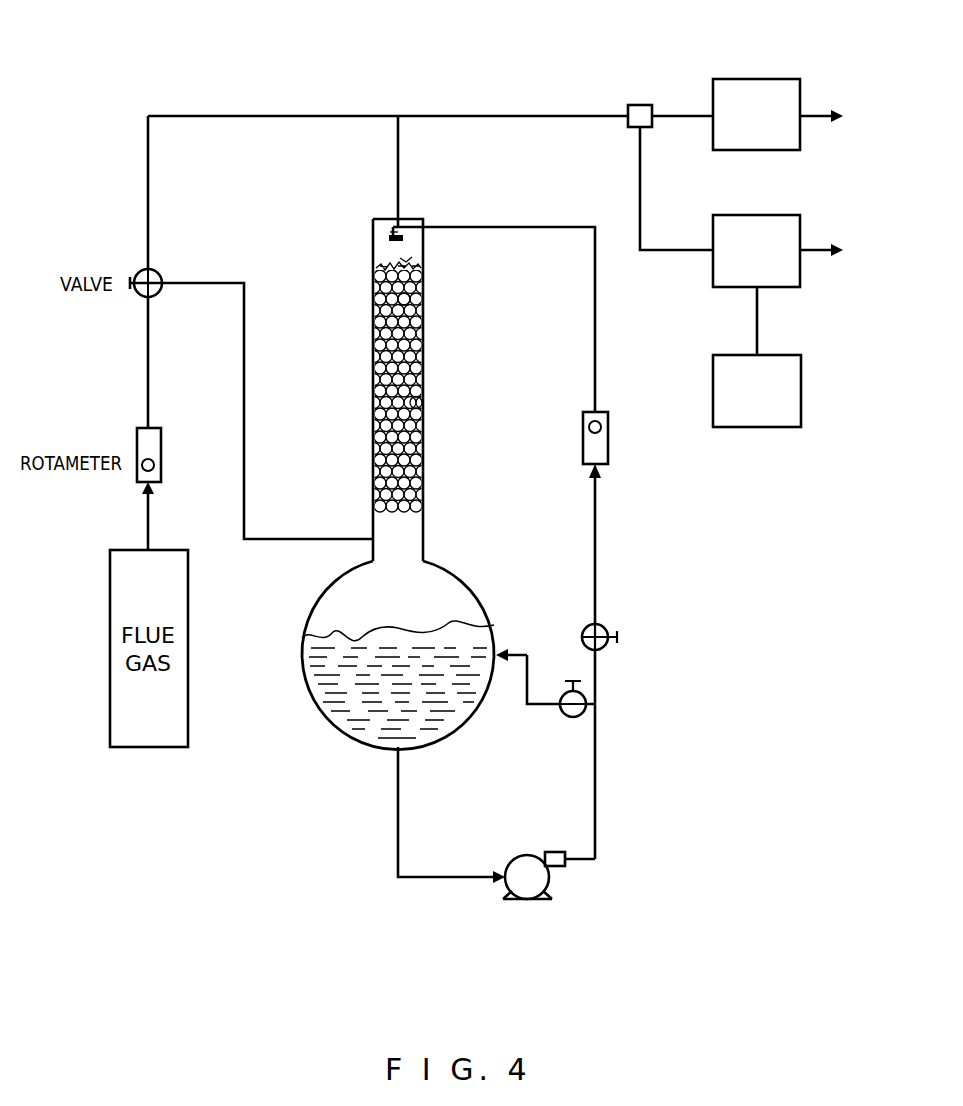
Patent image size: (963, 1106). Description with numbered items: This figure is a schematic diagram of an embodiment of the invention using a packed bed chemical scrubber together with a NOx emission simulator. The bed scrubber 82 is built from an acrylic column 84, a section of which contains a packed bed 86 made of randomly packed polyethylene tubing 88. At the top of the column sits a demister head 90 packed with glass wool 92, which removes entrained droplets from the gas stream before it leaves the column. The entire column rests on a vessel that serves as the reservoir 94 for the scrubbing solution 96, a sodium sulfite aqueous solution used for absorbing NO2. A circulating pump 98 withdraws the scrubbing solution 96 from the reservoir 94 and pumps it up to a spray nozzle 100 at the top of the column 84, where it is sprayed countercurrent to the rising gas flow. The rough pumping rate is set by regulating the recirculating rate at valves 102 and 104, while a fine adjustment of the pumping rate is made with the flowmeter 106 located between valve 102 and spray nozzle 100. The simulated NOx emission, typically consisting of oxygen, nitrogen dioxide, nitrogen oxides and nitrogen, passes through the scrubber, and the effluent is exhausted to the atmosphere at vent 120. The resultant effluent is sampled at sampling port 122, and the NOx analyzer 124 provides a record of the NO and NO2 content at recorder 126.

The bed scrubber 82 is at (432, 538).
The acrylic column 84 is at (404, 396).
The packed bed 86 is at (405, 300).
The polyethylene tubing 88 is at (418, 405).
The demister head 90 is at (375, 268).
The glass wool 92 is at (405, 262).
The reservoir 94 is at (411, 610).
The scrubbing solution 96 is at (314, 655).
The circulating pump 98 is at (517, 870).
The spray nozzle 100 is at (388, 238).
The valve 102 is at (598, 627).
The valve 104 is at (577, 718).
The flowmeter 106 is at (608, 412).
The vent 120 is at (770, 79).
The sampling port 122 is at (638, 105).
The NOx analyzer 124 is at (777, 215).
The recorder 126 is at (780, 427).